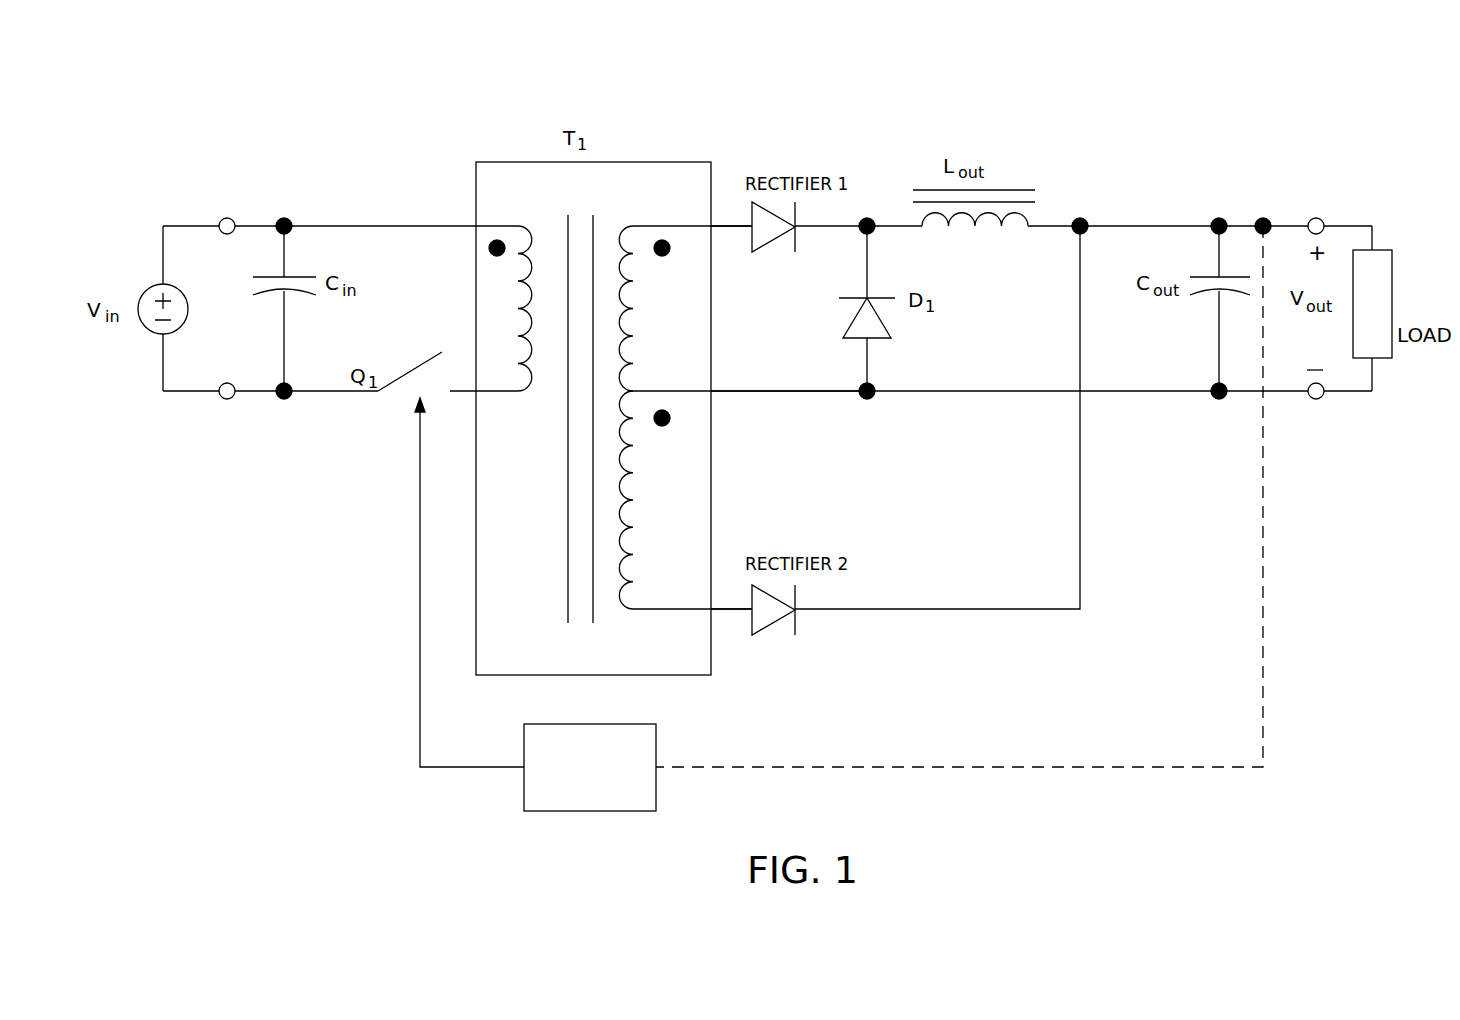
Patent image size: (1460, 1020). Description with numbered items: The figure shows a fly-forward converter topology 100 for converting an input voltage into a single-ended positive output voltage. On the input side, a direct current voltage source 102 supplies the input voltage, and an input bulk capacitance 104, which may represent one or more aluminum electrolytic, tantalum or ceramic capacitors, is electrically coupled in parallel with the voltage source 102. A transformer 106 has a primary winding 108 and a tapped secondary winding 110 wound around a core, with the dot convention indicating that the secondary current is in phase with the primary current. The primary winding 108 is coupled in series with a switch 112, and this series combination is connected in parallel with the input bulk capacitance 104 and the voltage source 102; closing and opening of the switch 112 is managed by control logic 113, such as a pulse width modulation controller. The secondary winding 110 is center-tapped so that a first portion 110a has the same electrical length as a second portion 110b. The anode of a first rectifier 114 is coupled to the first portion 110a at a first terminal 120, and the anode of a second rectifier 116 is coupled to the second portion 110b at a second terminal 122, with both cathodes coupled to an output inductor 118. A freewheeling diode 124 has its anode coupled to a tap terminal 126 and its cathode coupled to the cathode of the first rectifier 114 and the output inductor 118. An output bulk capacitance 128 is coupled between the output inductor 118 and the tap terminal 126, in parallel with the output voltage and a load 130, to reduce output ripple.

The fly-forward converter topology 100 is at (401, 122).
The voltage source 102 is at (146, 288).
The input bulk capacitance 104 is at (308, 274).
The transformer 106 is at (684, 162).
The primary winding 108 is at (520, 393).
The tapped secondary winding 110 is at (660, 469).
The first portion of the secondary winding 110a is at (637, 312).
The second portion of the secondary winding 110b is at (634, 609).
The switch 112 is at (411, 367).
The control logic 113 is at (612, 793).
The first rectifier 114 is at (770, 246).
The second rectifier 116 is at (770, 628).
The output inductor 118 is at (980, 230).
The first terminal 120 is at (722, 226).
The second terminal 122 is at (722, 609).
The freewheeling diode 124 is at (890, 338).
The tap terminal 126 is at (750, 392).
The output bulk capacitance 128 is at (1196, 276).
The load 130 is at (1394, 285).